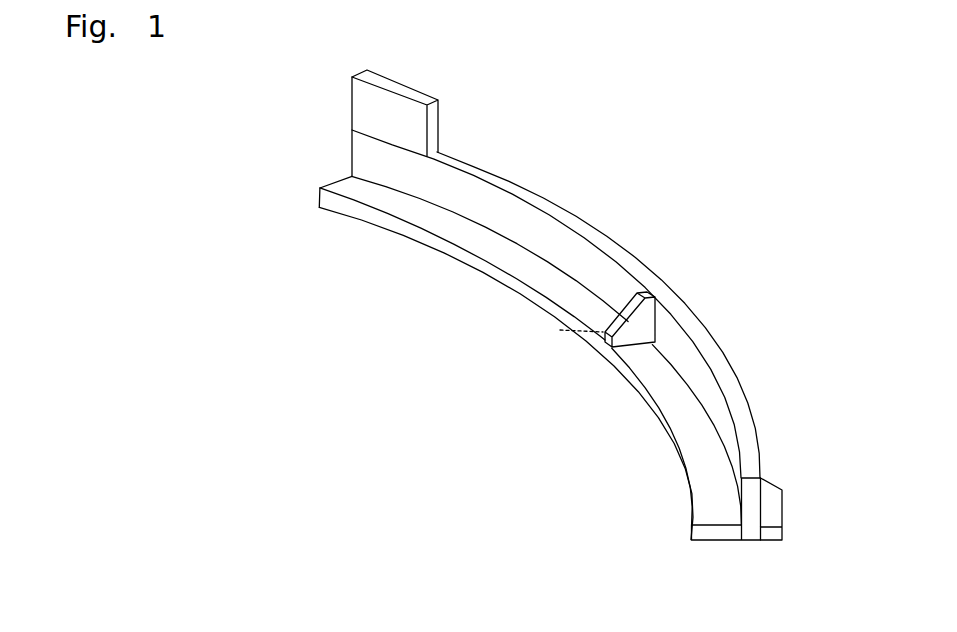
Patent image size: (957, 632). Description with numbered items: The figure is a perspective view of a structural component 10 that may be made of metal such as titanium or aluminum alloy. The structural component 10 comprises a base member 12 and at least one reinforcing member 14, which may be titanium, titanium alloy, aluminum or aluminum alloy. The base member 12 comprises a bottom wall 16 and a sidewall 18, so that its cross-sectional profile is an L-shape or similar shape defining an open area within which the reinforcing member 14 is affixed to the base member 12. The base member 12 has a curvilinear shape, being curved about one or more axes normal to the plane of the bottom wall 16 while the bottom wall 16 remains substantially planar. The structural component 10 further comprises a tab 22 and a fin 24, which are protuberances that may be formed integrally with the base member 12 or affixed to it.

The structural component 10 is at (273, 128).
The base member 12 is at (750, 525).
The reinforcing member 14 is at (638, 323).
The bottom wall 16 is at (457, 231).
The sidewall 18 is at (490, 208).
The tab 22 is at (780, 518).
The fin 24 is at (375, 93).